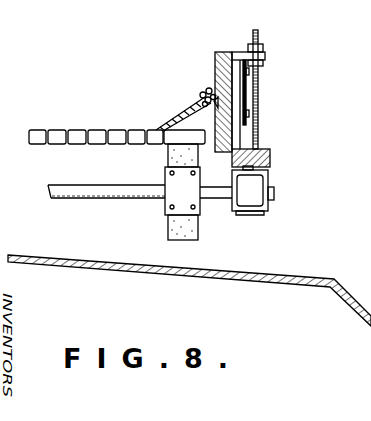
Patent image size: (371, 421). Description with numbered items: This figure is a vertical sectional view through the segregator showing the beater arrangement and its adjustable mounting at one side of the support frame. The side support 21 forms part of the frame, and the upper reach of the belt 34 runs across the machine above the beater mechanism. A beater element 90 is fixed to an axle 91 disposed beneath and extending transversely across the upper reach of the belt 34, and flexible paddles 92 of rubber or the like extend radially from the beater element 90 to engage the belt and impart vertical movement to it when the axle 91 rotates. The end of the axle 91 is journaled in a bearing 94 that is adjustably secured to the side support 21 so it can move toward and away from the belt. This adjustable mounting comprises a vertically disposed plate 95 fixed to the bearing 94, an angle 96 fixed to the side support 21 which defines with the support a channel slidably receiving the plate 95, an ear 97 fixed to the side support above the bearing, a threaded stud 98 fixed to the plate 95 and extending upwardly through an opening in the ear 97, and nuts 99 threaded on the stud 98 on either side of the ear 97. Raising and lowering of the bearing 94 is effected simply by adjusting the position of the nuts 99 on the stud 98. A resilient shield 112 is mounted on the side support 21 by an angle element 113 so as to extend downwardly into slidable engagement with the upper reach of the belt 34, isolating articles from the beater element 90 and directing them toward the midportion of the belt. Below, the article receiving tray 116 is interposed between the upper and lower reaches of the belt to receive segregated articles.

The side support 21 is at (215, 63).
The belt 34 is at (68, 130).
The beater element 90 is at (168, 200).
The axle 91 is at (80, 197).
The flexible paddle 92 is at (170, 155).
The bearing 94 is at (256, 212).
The vertically disposed plate 95 is at (238, 146).
The angle 96 is at (244, 82).
The ear 97 is at (235, 54).
The threaded stud 98 is at (259, 100).
The nut 99 is at (265, 58).
The shield 112 is at (180, 120).
The angle element 113 is at (199, 100).
The article receiving tray 116 is at (296, 284).